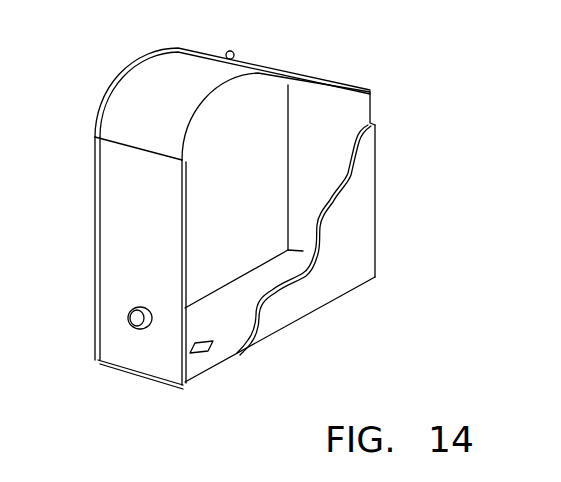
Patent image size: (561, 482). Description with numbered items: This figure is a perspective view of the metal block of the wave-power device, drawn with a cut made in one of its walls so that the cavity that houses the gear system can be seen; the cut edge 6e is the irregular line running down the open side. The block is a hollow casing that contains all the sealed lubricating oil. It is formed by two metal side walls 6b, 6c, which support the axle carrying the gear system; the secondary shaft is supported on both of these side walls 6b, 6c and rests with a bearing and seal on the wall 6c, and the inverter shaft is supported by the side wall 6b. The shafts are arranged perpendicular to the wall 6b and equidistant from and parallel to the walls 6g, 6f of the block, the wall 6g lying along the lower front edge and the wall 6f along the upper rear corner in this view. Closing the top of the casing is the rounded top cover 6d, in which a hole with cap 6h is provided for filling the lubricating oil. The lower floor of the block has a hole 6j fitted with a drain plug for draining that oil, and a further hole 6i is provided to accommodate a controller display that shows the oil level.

The metal side wall 6b is at (97, 245).
The side wall 6c is at (353, 203).
The top cover 6d is at (130, 100).
The cut edge of wall 6e is at (228, 312).
The wall 6f is at (372, 110).
The wall 6g is at (147, 358).
The hole with cap 6h is at (234, 53).
The hole for oil level controller display 6i is at (127, 318).
The hole with drain plug 6j is at (198, 355).